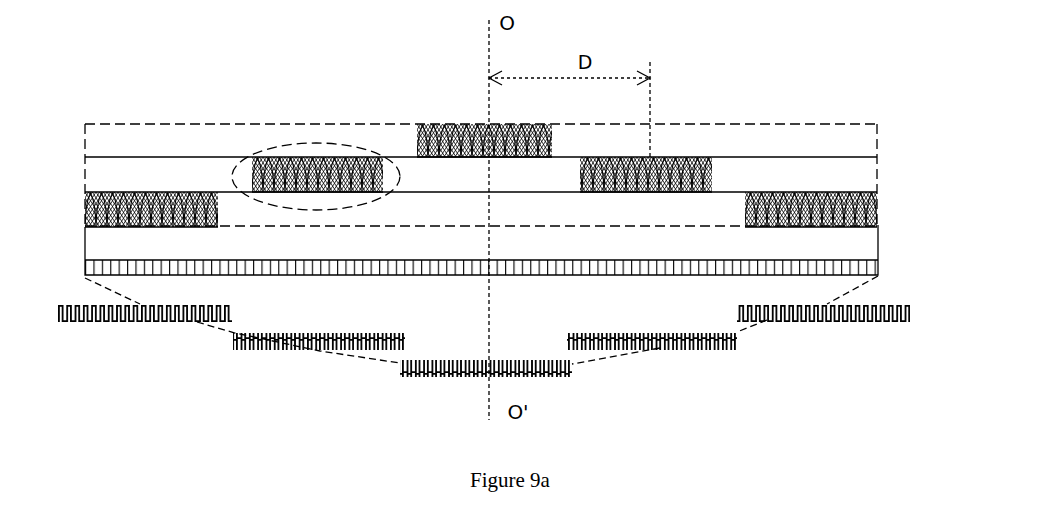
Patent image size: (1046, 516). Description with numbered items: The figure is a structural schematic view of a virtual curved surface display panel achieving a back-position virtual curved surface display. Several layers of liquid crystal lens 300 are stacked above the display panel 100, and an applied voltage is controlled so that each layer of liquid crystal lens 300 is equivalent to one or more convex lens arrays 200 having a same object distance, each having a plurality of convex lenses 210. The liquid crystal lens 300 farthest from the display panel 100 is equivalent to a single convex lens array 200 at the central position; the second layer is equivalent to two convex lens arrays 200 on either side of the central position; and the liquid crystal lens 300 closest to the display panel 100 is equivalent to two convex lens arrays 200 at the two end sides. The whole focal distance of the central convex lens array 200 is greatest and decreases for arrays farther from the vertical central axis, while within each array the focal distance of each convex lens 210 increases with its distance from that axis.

The display panel 100 is at (878, 267).
The convex lens array 200 is at (400, 178).
The convex lens 210 is at (563, 127).
The liquid crystal lens 300 is at (877, 139).